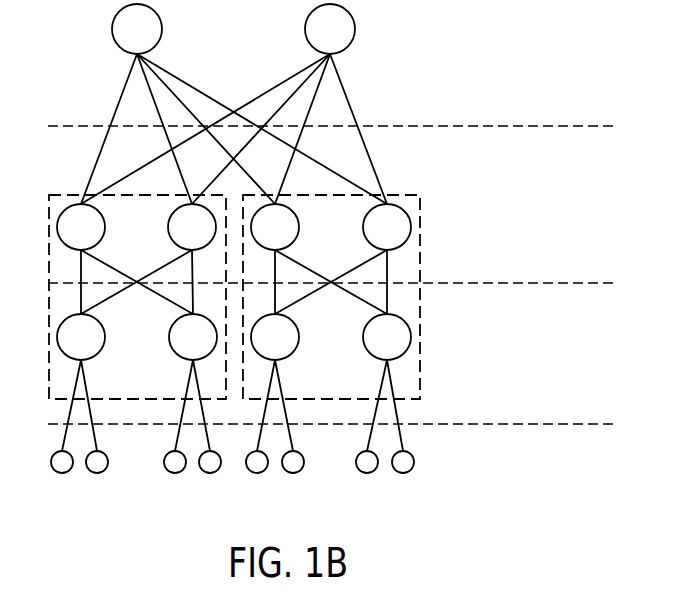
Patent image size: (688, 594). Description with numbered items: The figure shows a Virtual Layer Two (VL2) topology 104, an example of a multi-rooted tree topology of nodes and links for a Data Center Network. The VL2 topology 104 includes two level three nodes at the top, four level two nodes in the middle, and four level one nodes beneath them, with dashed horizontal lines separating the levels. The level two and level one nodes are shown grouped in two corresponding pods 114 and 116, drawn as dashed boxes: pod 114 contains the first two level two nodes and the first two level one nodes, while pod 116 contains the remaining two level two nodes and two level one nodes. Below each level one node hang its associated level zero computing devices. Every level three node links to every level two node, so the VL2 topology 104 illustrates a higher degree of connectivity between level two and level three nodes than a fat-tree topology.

The Virtual Layer Two (VL2) topology 104 is at (330, 268).
The pod 114 is at (157, 390).
The pod 116 is at (351, 390).